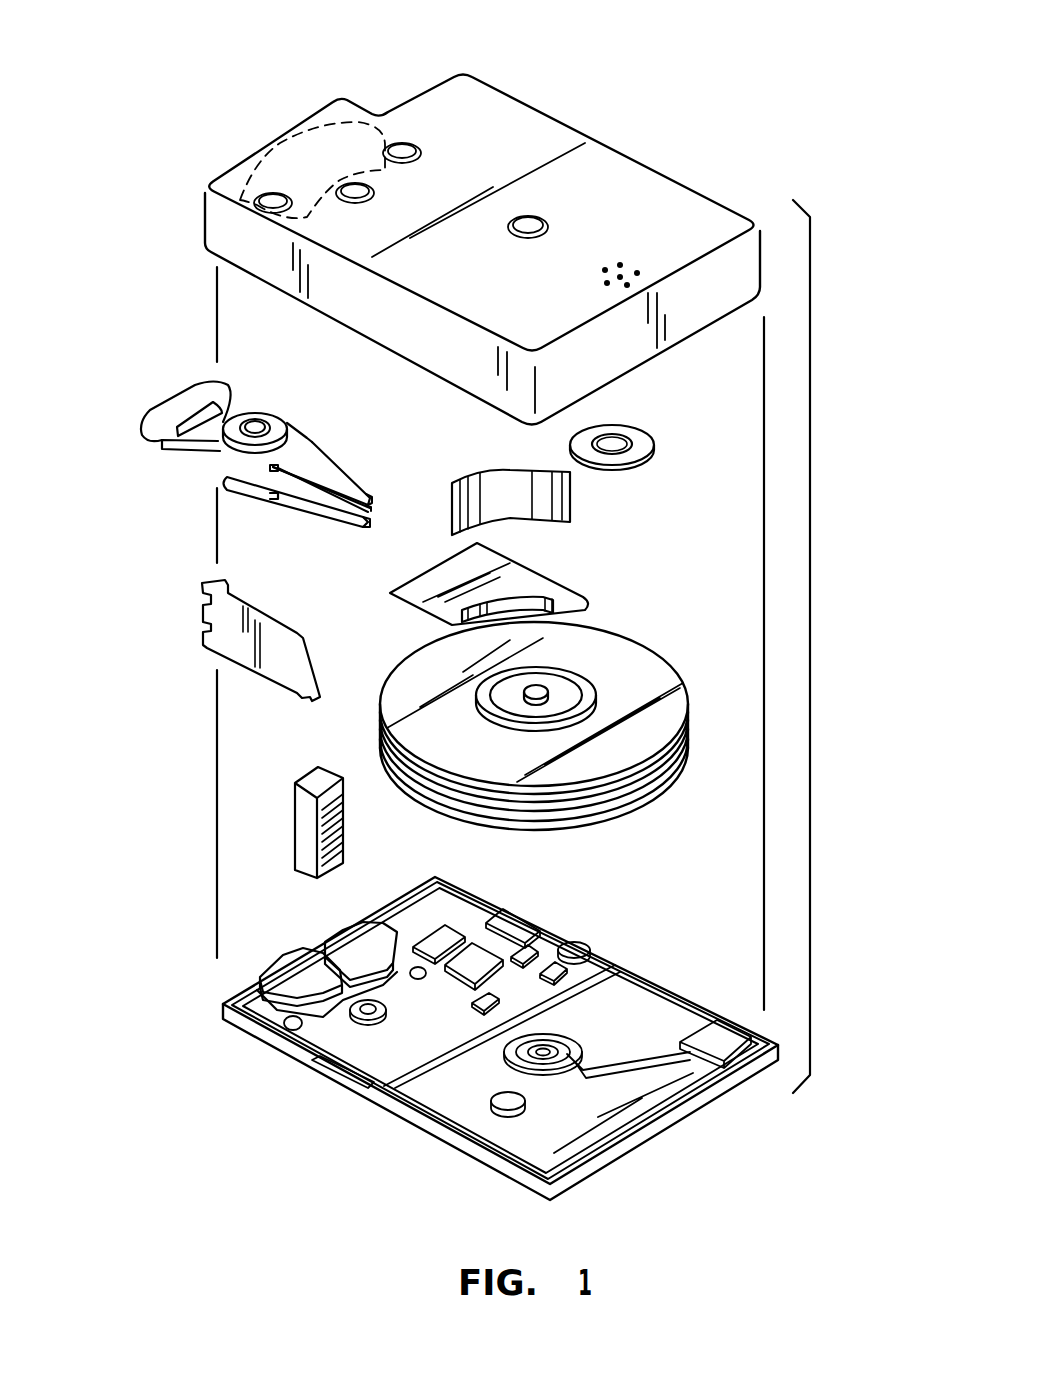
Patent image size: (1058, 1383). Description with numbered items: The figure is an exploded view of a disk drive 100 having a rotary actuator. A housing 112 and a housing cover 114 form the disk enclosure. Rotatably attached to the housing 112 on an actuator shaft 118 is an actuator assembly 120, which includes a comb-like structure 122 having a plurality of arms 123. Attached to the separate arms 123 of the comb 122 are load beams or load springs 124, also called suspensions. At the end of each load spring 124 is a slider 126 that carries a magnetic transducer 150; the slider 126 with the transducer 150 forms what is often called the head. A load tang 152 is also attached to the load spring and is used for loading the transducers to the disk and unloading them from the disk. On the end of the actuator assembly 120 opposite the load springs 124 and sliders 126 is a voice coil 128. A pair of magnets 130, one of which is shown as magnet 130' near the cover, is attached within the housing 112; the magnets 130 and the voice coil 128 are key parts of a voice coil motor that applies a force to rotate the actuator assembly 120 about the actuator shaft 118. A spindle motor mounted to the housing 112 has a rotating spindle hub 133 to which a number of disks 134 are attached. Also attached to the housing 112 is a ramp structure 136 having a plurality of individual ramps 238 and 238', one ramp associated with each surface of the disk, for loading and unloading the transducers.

The disk drive 100 is at (636, 88).
The housing 112 is at (669, 1005).
The housing cover 114 is at (645, 186).
The actuator shaft 118 is at (255, 420).
The actuator assembly 120 is at (192, 460).
The comb-like structure 122 is at (293, 502).
The arms 123 is at (290, 418).
The load springs 124 is at (337, 470).
The slider 126 is at (374, 496).
The voice coil 128 is at (168, 407).
The magnets 130 is at (260, 947).
The magnet 130' is at (304, 145).
The spindle hub 133 is at (538, 688).
The disks 134 is at (662, 665).
The ramp structure 136 is at (300, 827).
The magnetic transducer 150 is at (372, 502).
The load tang 152 is at (374, 520).
The ramp 238 is at (297, 773).
The ramp 238' is at (369, 831).